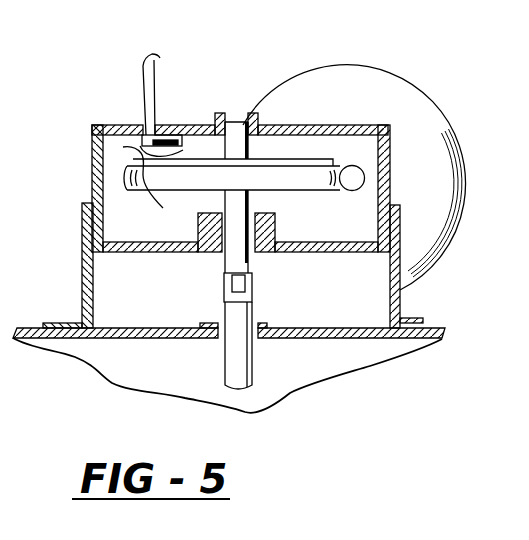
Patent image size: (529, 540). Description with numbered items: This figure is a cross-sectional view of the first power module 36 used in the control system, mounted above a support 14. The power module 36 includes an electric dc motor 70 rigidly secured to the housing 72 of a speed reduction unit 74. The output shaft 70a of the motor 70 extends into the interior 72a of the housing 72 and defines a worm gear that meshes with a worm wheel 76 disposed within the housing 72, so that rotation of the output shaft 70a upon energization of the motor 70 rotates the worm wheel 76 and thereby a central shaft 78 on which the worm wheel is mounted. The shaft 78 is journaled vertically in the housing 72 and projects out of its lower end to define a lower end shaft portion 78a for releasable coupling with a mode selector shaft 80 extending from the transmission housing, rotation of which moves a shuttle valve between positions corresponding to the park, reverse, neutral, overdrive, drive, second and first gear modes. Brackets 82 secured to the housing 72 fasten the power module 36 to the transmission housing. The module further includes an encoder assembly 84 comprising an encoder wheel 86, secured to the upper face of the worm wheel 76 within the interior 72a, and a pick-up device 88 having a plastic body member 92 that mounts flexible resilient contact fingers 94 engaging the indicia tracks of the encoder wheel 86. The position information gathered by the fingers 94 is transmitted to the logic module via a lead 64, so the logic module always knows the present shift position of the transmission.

The panel / support plate 14 is at (298, 352).
The first power module 36 is at (396, 60).
The lead 64 is at (143, 64).
The electric dc motor 70 is at (428, 127).
The output shaft 70a is at (363, 179).
The housing 72 is at (200, 124).
The interior 72a is at (143, 227).
The speed reduction unit 74 is at (270, 74).
The worm wheel 76 is at (296, 176).
The central shaft 78 is at (253, 203).
The lower end shaft portion 78a is at (247, 263).
The mode selector shaft 80 is at (236, 356).
The brackets 82 is at (402, 300).
The encoder assembly 84 is at (105, 124).
The encoder wheel 86 is at (123, 147).
The pick-up device 88 is at (164, 112).
The plastic body member 92 is at (173, 142).
The contact fingers 94 is at (167, 186).